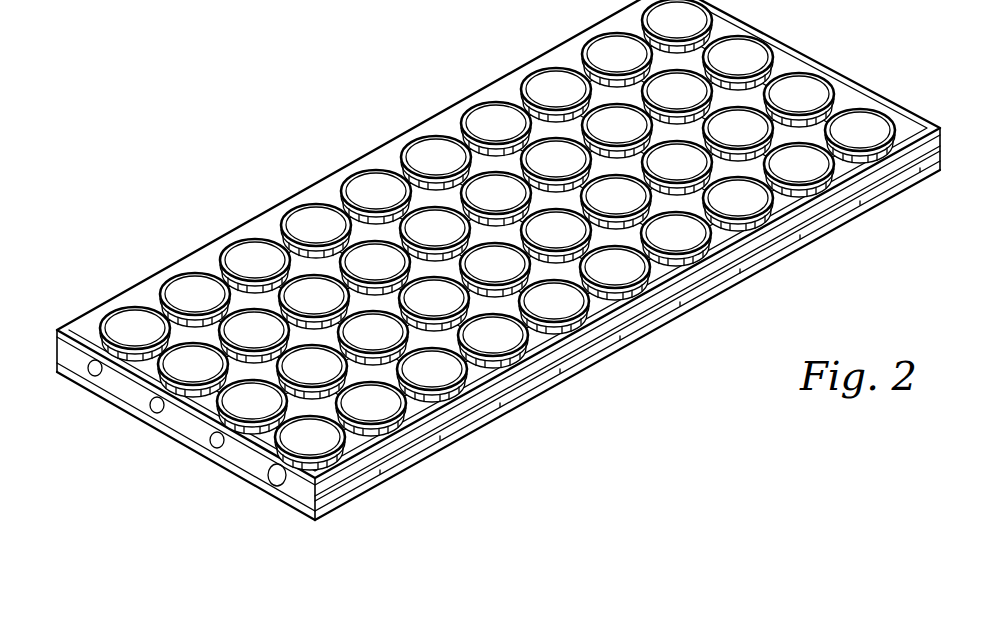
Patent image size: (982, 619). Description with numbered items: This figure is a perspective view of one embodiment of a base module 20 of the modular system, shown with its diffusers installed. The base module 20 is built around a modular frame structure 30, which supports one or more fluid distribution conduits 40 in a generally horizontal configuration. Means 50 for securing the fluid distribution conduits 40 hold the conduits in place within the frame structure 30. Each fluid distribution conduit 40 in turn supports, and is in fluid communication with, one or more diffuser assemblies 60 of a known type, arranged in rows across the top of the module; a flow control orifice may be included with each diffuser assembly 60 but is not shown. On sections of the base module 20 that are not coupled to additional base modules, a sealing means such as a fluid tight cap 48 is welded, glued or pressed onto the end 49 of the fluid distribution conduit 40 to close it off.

The base module 20 is at (257, 181).
The modular frame structure 30 is at (707, 287).
The fluid distribution conduit 40 is at (420, 333).
The fluid tight cap 48 is at (257, 490).
The end of the fluid distribution conduit 49 is at (198, 450).
The means for securing the fluid distribution conduits 50 is at (546, 262).
The diffuser assembly 60 is at (483, 110).